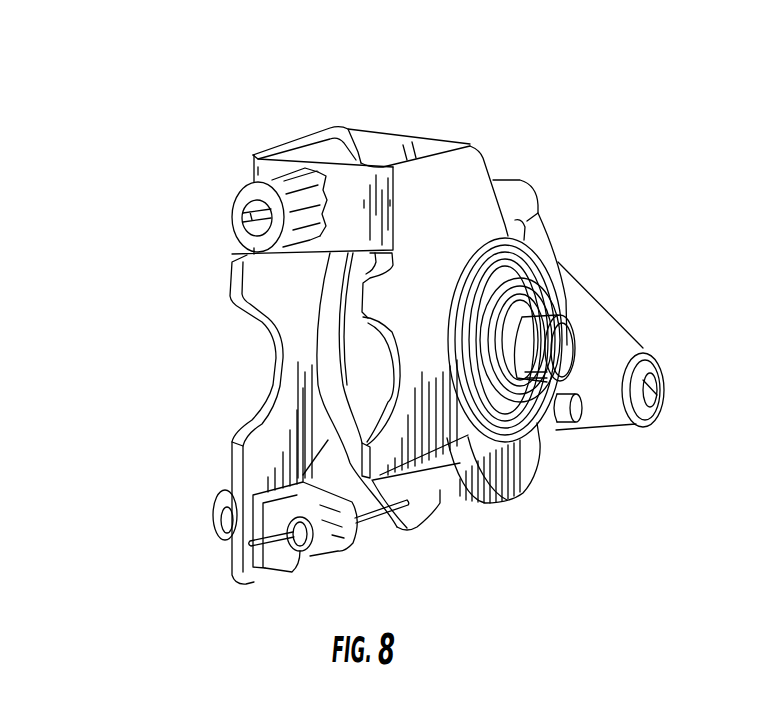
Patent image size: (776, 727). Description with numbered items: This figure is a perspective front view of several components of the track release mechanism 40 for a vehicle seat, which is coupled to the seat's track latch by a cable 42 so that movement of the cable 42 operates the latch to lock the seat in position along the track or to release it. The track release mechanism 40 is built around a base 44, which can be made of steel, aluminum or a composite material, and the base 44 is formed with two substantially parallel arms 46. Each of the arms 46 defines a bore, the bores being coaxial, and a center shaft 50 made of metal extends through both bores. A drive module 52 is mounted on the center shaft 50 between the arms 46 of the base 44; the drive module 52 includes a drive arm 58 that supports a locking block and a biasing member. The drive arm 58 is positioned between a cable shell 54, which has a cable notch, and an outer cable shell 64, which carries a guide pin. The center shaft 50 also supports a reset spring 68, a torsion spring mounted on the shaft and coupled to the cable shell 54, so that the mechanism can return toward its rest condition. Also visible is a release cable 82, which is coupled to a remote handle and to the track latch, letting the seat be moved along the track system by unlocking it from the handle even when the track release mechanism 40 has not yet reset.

The track release mechanism 40 is at (183, 84).
The cable 42 is at (250, 222).
The base 44 is at (344, 194).
The arms 46 is at (258, 333).
The center shaft 50 is at (532, 310).
The drive module 52 is at (505, 122).
The cable shell 54 is at (432, 550).
The drive arm 58 is at (640, 350).
The outer cable shell 64 is at (513, 498).
The reset spring 68 is at (547, 430).
The release cable 82 is at (263, 568).